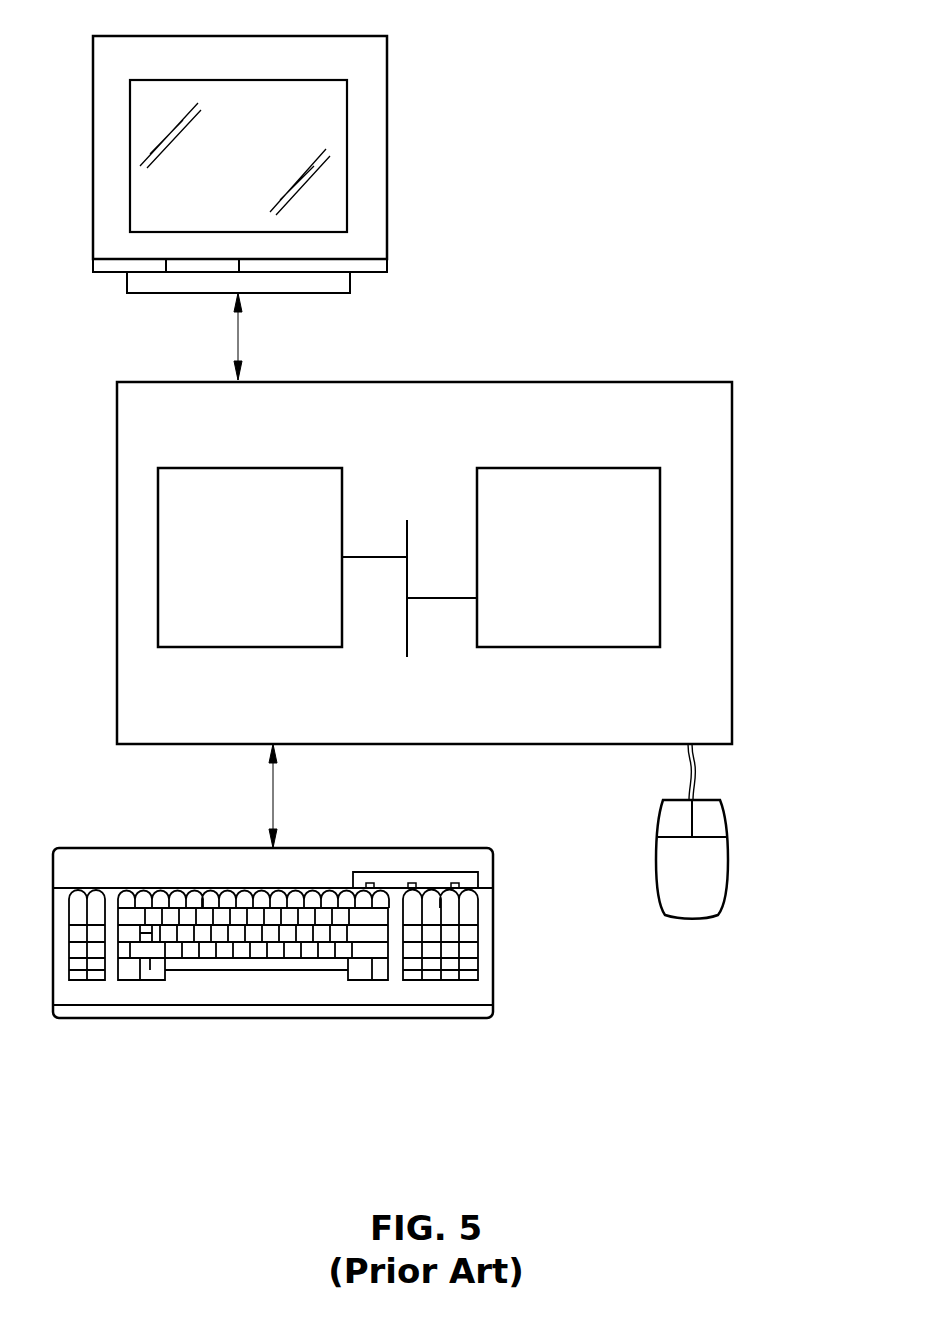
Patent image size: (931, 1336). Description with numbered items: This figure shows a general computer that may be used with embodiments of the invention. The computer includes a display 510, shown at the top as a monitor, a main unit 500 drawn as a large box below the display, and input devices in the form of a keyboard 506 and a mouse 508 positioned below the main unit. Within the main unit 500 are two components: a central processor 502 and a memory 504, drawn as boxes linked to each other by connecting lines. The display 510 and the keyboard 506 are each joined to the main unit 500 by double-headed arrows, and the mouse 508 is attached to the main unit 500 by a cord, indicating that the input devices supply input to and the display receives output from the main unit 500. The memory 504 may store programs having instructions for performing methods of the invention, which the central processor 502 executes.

The main unit 500 is at (486, 563).
The central processor 502 is at (222, 571).
The memory 504 is at (543, 577).
The keyboard 506 is at (157, 1018).
The mouse 508 is at (666, 888).
The display 510 is at (212, 177).